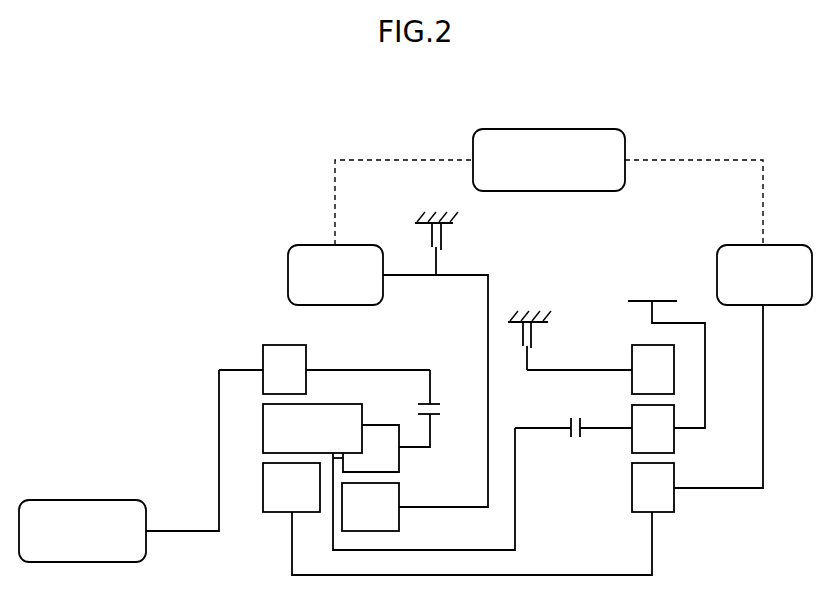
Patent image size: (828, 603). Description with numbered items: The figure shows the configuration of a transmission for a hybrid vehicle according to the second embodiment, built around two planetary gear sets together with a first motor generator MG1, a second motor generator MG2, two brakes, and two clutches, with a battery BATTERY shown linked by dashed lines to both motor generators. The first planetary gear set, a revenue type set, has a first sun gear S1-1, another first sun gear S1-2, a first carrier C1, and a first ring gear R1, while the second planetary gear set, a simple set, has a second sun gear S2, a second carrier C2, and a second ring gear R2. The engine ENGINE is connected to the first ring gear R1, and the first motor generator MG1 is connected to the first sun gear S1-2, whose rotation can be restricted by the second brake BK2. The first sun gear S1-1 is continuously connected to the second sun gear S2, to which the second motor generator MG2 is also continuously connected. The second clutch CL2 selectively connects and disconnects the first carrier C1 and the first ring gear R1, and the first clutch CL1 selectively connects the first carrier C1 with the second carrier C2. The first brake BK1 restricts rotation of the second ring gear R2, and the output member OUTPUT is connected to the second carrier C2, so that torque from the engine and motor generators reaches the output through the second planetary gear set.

The engine ENGINE is at (82, 531).
The first motor generator MG1 is at (335, 275).
The second motor generator MG2 is at (764, 275).
The battery BATTERY is at (549, 160).
The first brake BK1 is at (528, 326).
The second brake BK2 is at (436, 229).
The first ring gear R1 is at (284, 369).
The second ring gear R2 is at (653, 369).
The first carrier C1 is at (312, 428).
The second carrier C2 is at (653, 429).
The first sun gear S1-1 is at (291, 487).
The first sun gear S1-2 is at (370, 507).
The second sun gear S2 is at (653, 487).
The first clutch CL1 is at (573, 442).
The second clutch CL2 is at (451, 409).
The output member OUTPUT is at (651, 286).